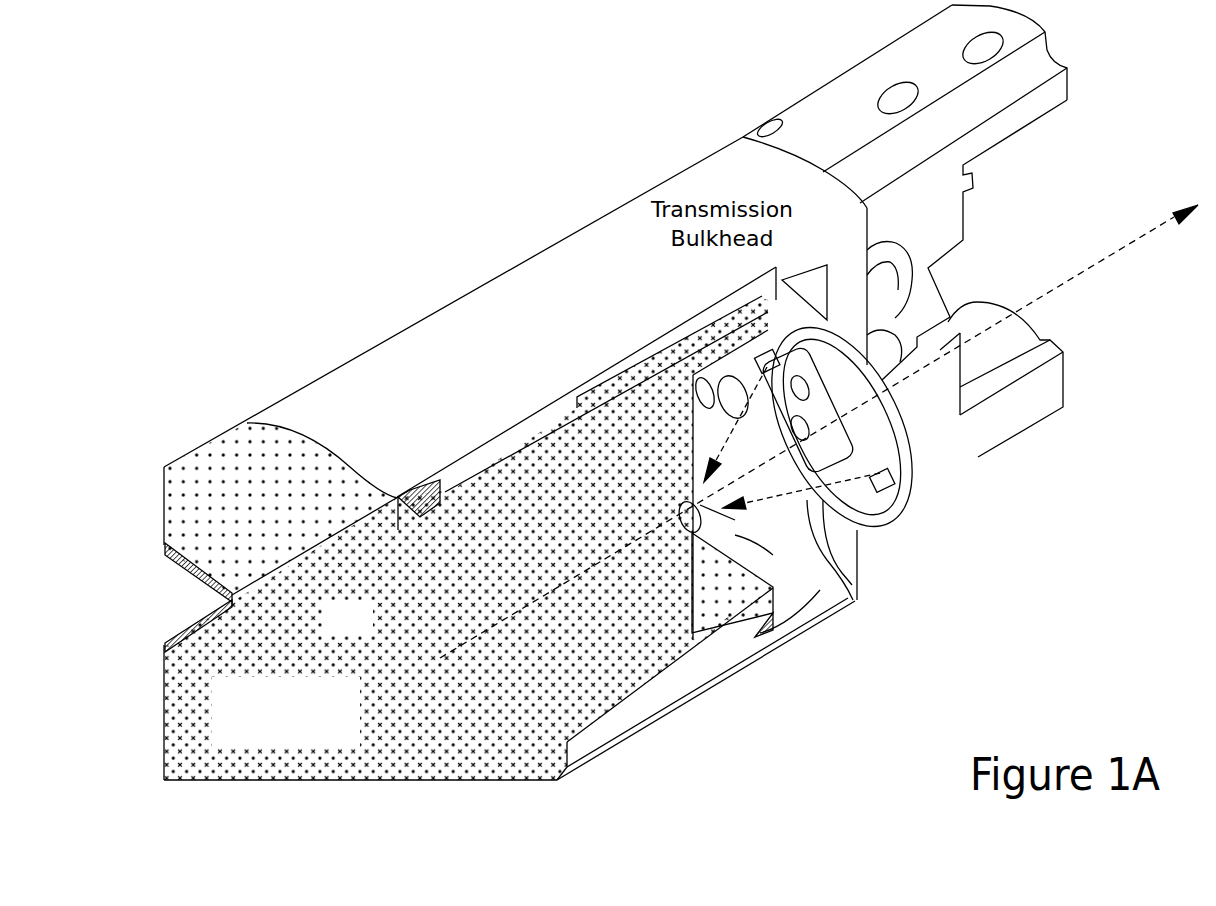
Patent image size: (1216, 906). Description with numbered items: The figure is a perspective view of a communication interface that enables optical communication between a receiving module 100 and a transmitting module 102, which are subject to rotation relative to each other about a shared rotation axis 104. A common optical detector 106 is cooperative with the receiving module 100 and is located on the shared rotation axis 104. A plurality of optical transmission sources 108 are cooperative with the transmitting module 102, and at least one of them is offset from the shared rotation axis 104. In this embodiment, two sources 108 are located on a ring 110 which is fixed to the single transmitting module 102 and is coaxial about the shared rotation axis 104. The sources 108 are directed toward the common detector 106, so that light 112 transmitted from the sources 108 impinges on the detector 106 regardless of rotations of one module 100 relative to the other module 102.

The receiving module 100 is at (533, 356).
The transmitting module 102 is at (330, 632).
The shared rotation axis 104 is at (819, 431).
The common optical detector 106 is at (735, 485).
The optical transmission sources 108 is at (898, 516).
The ring 110 is at (864, 532).
The light 112 is at (853, 600).